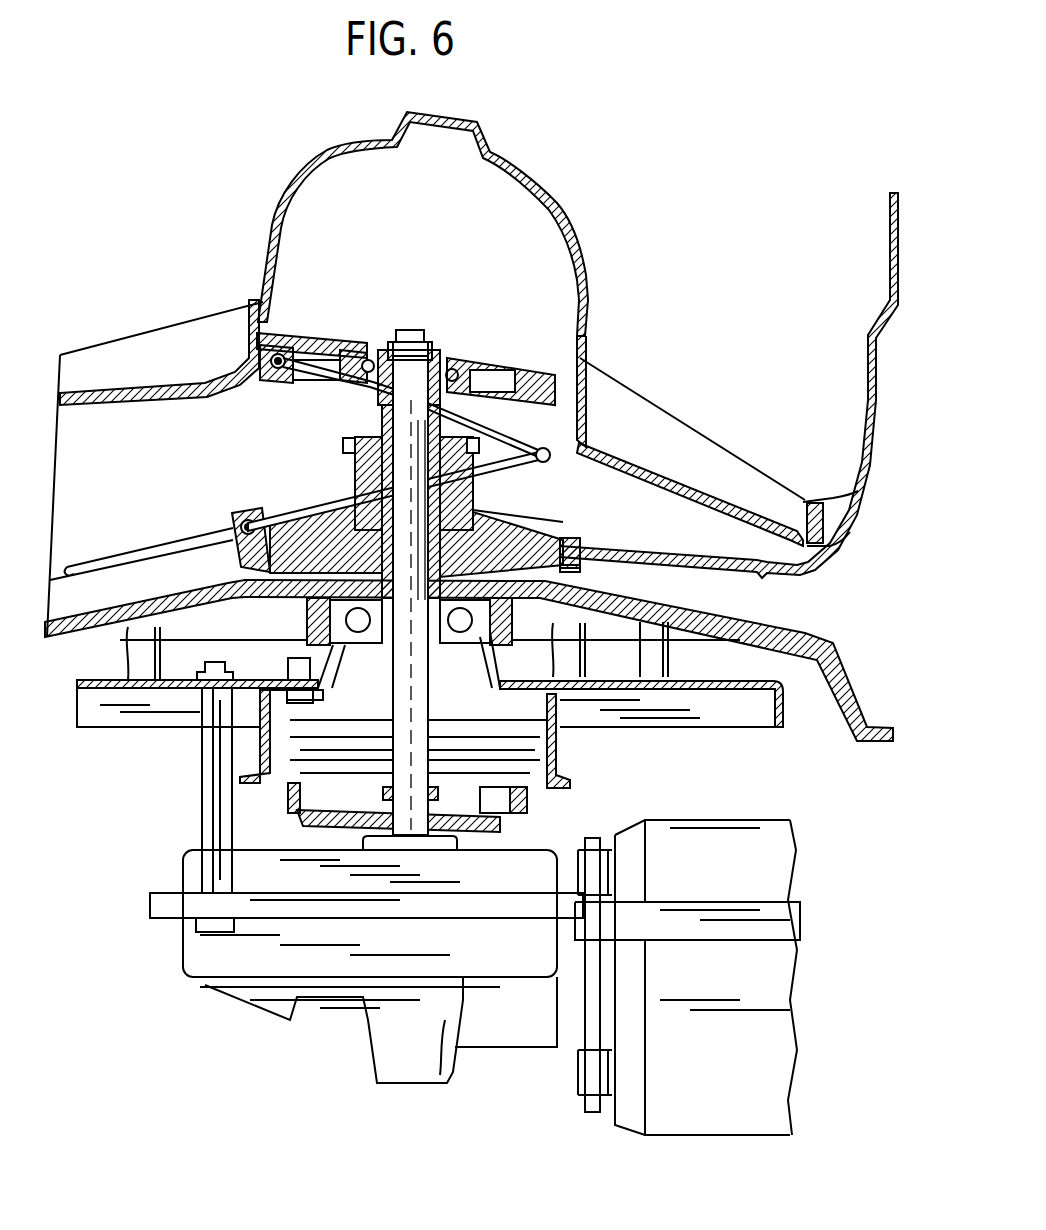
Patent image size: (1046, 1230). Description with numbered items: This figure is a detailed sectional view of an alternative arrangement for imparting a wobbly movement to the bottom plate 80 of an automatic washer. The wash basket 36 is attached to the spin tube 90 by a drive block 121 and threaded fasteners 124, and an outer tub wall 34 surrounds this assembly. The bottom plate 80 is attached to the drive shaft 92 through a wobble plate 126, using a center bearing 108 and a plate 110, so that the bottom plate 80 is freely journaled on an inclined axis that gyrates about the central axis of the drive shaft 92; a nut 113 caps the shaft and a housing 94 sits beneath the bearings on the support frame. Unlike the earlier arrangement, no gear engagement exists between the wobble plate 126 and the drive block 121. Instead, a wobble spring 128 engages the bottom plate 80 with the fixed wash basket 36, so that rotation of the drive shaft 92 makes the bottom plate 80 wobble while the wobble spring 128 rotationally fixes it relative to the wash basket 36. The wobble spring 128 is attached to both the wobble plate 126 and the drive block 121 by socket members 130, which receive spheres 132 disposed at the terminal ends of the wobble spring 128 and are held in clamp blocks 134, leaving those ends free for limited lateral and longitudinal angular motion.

The outer tub bottom wall 34 is at (766, 624).
The wash basket 36 is at (892, 238).
The bottom plate 80 is at (686, 498).
The spin tube 90 is at (443, 655).
The drive shaft 92 is at (397, 663).
The clutch housing 94 is at (560, 755).
The center bearing 108 is at (456, 343).
The plate 110 is at (296, 340).
The agitator shaft nut 113 is at (413, 338).
The drive block 121 is at (582, 566).
The threaded fasteners 124 is at (565, 542).
The wobble plate 126 is at (578, 398).
The wobble spring 128 is at (550, 452).
The socket members 130 is at (271, 358).
The spheres 132 is at (285, 372).
The clamp block 134 is at (257, 362).